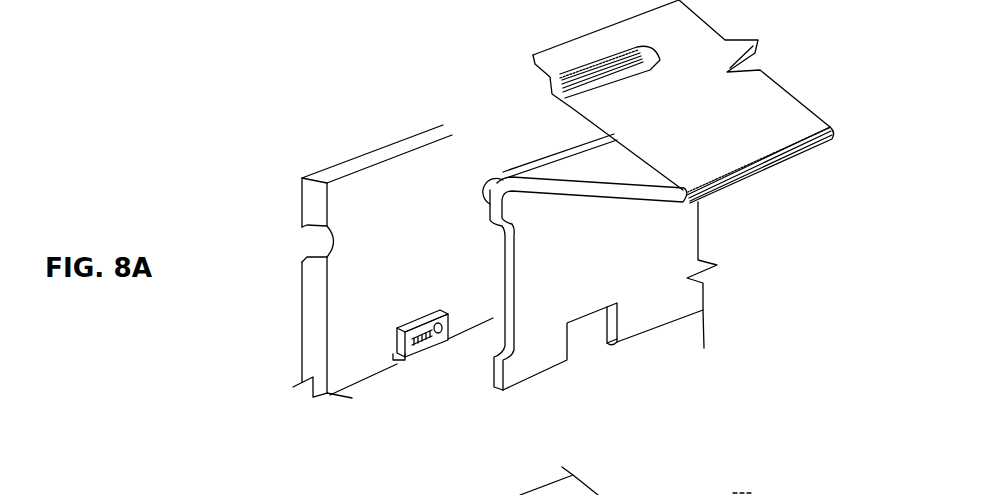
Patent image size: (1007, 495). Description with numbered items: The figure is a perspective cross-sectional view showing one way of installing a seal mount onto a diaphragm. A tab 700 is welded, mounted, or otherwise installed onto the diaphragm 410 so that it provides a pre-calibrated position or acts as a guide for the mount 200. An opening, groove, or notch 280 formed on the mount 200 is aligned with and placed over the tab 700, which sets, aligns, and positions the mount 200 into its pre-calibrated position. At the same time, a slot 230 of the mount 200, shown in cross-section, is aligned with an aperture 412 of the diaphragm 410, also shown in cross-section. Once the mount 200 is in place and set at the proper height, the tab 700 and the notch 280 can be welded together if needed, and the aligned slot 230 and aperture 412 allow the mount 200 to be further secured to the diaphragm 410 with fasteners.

The mount 200 is at (773, 107).
The slot 230 is at (507, 318).
The notch 280 is at (615, 322).
The diaphragm 410 is at (311, 195).
The aperture 412 is at (307, 243).
The tab 700 is at (408, 354).